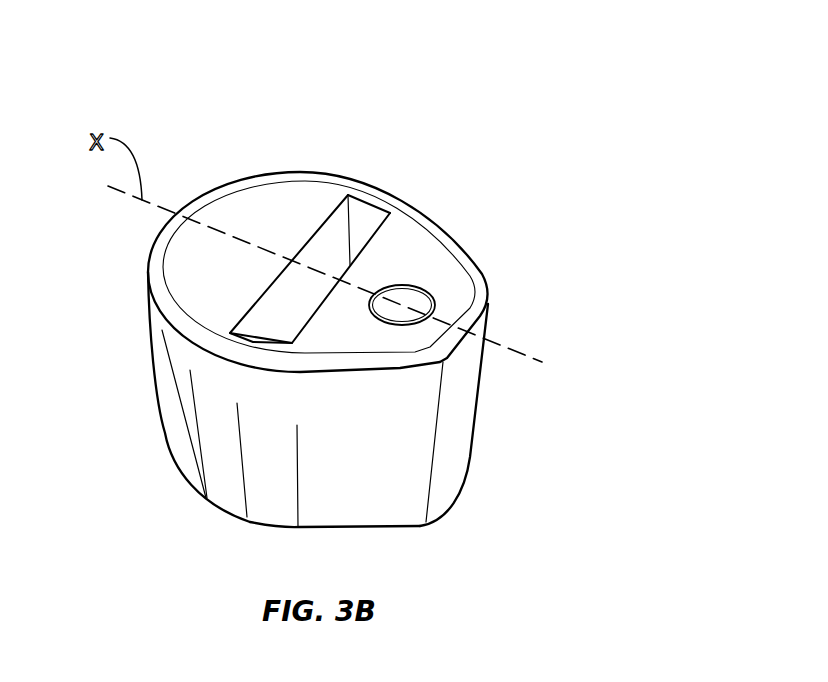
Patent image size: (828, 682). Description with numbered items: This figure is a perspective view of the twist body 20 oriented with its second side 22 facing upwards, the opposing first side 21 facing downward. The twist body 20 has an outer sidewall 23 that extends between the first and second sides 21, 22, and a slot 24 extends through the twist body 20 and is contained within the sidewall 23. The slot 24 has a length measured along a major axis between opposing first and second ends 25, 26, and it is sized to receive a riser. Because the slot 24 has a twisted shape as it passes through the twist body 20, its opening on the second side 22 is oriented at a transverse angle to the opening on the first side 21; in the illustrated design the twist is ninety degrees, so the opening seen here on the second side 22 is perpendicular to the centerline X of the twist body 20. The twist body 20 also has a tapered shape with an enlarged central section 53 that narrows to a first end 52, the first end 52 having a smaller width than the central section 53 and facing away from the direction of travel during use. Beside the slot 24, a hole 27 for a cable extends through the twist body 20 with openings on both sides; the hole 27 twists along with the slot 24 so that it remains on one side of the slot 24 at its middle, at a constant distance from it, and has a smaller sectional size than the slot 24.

The twist body 20 is at (212, 117).
The first side 21 is at (352, 528).
The second side 22 is at (280, 202).
The outer sidewall 23 is at (200, 418).
The slot 24 is at (362, 220).
The first end 25 is at (385, 210).
The second end 26 is at (255, 340).
The hole 27 is at (403, 303).
The first end 52 is at (460, 432).
The central section 53 is at (228, 260).